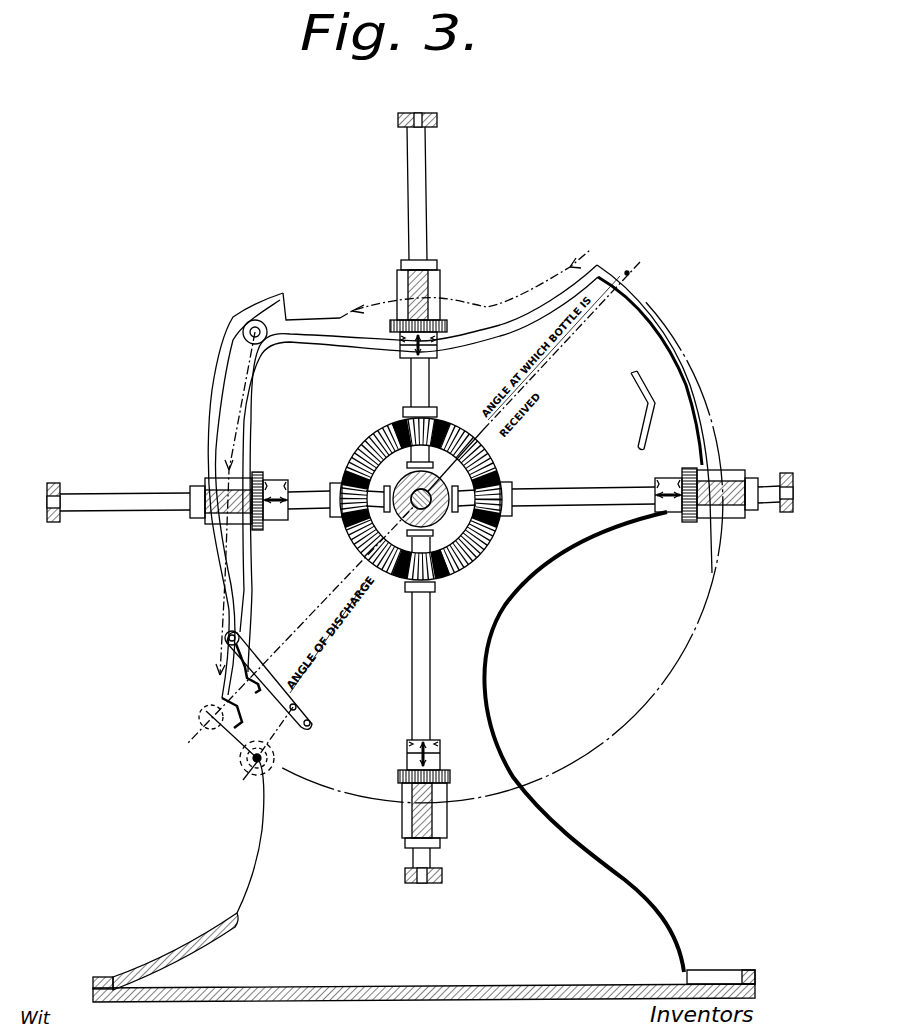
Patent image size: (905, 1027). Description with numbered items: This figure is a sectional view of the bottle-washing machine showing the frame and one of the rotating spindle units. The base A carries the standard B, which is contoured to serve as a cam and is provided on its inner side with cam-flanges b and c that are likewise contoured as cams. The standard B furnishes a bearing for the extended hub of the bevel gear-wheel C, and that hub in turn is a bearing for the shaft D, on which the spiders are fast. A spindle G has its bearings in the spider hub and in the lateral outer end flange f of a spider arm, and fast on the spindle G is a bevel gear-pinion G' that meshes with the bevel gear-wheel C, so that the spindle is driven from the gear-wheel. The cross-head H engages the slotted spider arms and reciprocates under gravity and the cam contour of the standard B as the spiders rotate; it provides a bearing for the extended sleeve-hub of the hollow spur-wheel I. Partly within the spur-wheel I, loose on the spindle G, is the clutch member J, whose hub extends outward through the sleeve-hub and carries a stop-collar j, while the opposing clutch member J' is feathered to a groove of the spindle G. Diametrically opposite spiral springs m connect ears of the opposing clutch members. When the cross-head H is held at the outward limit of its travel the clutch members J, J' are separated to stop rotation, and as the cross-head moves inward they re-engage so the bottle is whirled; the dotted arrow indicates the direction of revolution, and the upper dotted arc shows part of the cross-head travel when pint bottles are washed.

The base A is at (300, 990).
The standard B is at (480, 669).
The cam-flange b is at (640, 435).
The cam-flange c is at (240, 645).
The bevel gear-wheel C is at (358, 452).
The shaft D is at (423, 504).
The spindle G is at (420, 497).
The bevel gear-pinion G' is at (421, 497).
The lateral outer end flange f is at (437, 120).
The stop-collar j is at (437, 265).
The cross-head H is at (440, 290).
The hollow spur-wheel I is at (440, 326).
The clutch member J is at (472, 556).
The clutch member J' is at (472, 551).
The spiral spring m is at (440, 336).